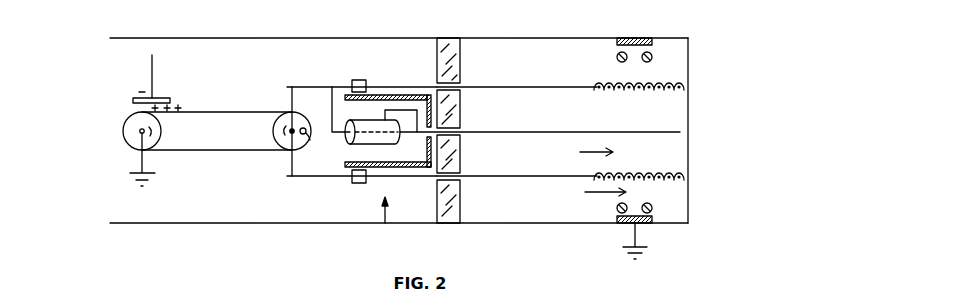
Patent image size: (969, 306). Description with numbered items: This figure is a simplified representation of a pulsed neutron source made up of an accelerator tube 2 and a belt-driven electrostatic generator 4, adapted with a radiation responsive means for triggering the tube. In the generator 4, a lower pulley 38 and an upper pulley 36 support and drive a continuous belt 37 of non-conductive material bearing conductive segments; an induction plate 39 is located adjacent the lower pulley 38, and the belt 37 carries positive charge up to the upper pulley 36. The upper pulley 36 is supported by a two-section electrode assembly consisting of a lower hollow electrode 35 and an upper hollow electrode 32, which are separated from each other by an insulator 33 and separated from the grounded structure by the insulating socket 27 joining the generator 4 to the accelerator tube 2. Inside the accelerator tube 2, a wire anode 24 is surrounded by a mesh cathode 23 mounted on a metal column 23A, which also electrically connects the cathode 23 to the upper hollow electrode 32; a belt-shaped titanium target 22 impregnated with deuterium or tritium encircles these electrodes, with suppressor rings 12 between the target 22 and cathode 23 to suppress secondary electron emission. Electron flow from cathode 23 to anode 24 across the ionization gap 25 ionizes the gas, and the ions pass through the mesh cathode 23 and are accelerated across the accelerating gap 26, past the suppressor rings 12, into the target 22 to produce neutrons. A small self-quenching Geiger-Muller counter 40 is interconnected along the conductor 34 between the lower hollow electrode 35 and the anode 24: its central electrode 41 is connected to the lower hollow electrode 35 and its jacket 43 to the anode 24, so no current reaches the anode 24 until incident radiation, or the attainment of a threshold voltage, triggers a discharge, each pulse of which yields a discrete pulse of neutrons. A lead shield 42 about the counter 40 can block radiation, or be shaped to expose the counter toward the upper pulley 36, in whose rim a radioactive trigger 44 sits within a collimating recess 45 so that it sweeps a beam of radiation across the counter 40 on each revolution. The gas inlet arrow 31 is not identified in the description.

The accelerator tube 2 is at (549, 38).
The electrostatic generator 4 is at (300, 38).
The suppressor rings 12 is at (617, 58).
The target 22 is at (617, 44).
The cathode 23 is at (657, 175).
The column 23A is at (555, 88).
The anode 24 is at (645, 131).
The ionization gap 25 is at (587, 152).
The accelerating gap 26 is at (594, 192).
The insulating socket 27 is at (462, 70).
The air inlet 31 is at (383, 216).
The upper hollow electrode 32 is at (394, 86).
The insulator 33 is at (368, 80).
The conductor 34 is at (474, 124).
The lower hollow electrode 35 is at (322, 87).
The upper pulley 36 is at (274, 136).
The belt 37 is at (247, 112).
The lower pulley 38 is at (161, 130).
The induction plate 39 is at (160, 98).
The Geiger-Muller counter 40 is at (386, 143).
The central electrode 41 is at (372, 123).
The lead shield 42 is at (384, 182).
The jacket 43 is at (349, 142).
The trigger 44 is at (303, 128).
The recess 45 is at (308, 134).